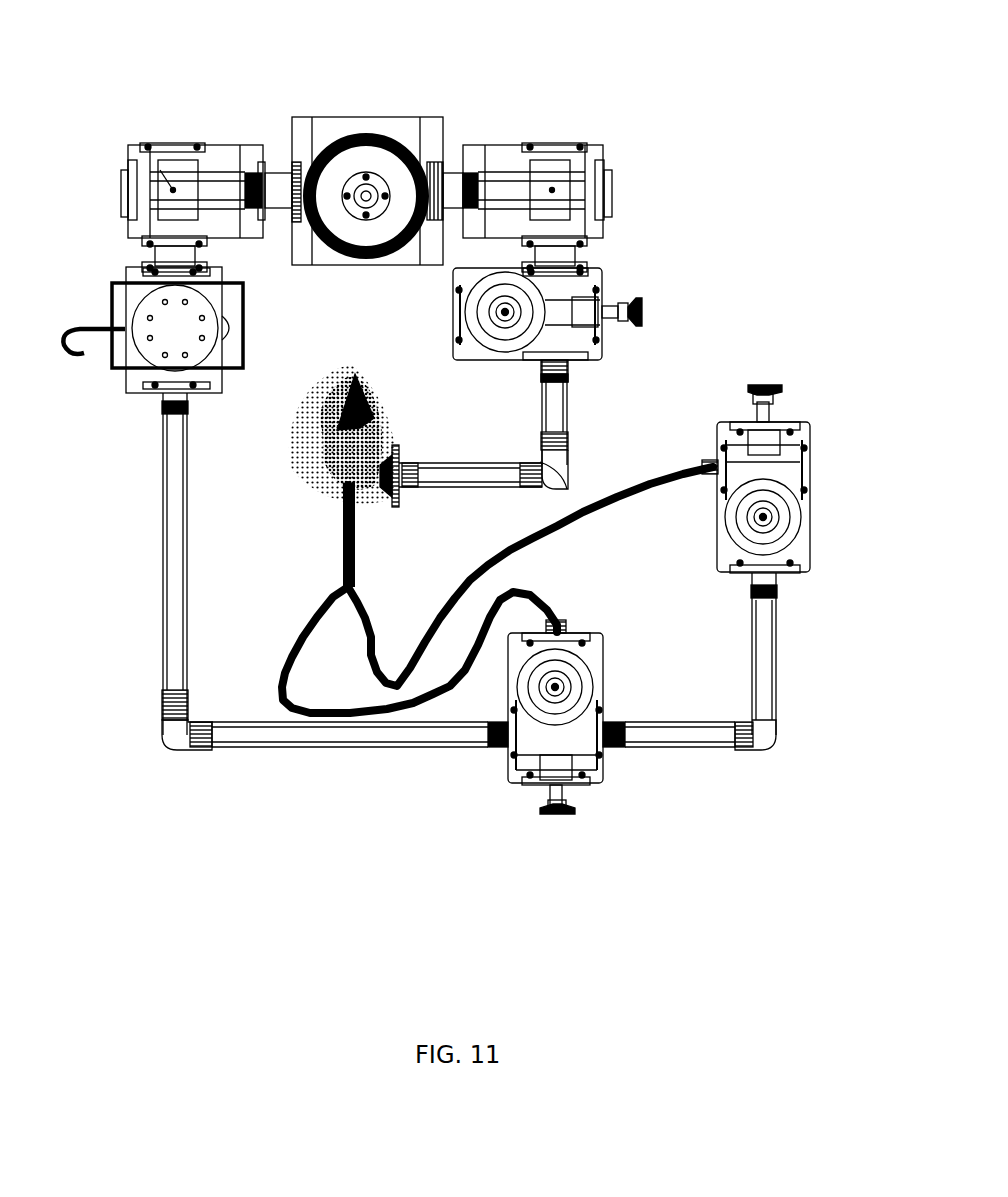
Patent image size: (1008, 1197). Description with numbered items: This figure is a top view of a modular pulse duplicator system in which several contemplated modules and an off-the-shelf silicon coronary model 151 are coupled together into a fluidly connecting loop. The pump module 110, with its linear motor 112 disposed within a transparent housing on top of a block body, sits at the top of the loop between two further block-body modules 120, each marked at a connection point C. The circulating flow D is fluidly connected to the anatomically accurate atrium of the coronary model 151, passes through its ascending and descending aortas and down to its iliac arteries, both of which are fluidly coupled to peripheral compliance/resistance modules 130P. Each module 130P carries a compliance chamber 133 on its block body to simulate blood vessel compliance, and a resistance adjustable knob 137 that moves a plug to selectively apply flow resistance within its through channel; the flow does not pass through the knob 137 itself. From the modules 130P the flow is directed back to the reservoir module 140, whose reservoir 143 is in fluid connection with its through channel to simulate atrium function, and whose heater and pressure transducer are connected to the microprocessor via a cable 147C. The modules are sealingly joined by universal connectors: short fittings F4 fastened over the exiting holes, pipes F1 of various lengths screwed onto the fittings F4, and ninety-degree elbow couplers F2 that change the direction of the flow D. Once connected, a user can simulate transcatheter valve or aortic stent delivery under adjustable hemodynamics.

The pump module 110 is at (297, 118).
The linear motor 112 is at (382, 155).
The four-way valve 120 is at (128, 147).
The peripheral compliance/resistance module 130P is at (805, 423).
The compliance chamber 133 is at (520, 340).
The resistance adjustable knob 137 is at (645, 318).
The reservoir module 140 is at (105, 268).
The reservoir 143 is at (155, 353).
The cable 147C is at (92, 320).
The coronary model 151 is at (293, 483).
The pipe F1 is at (178, 560).
The coupler F2 is at (163, 725).
The fitting F4 is at (163, 406).
The connection point C is at (173, 140).
The circulating flow D is at (395, 87).